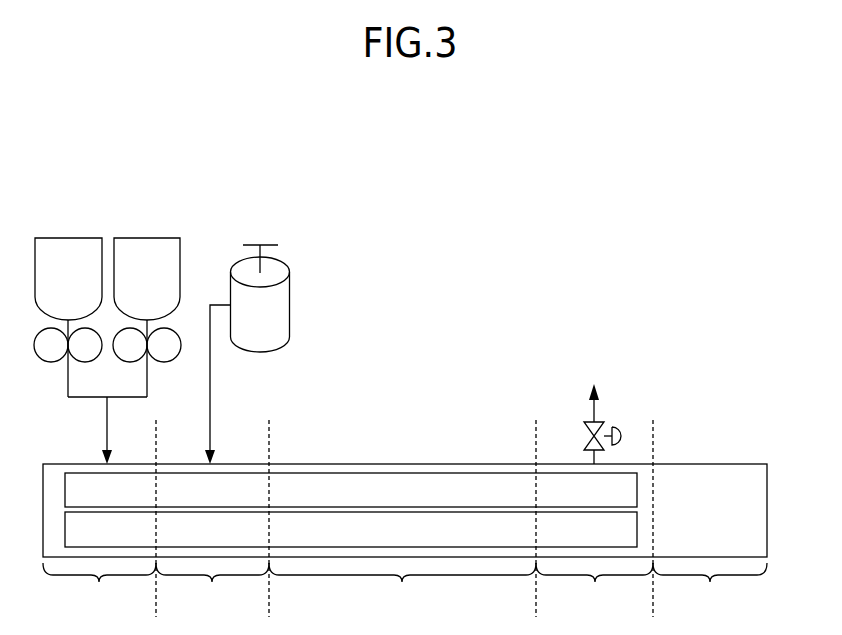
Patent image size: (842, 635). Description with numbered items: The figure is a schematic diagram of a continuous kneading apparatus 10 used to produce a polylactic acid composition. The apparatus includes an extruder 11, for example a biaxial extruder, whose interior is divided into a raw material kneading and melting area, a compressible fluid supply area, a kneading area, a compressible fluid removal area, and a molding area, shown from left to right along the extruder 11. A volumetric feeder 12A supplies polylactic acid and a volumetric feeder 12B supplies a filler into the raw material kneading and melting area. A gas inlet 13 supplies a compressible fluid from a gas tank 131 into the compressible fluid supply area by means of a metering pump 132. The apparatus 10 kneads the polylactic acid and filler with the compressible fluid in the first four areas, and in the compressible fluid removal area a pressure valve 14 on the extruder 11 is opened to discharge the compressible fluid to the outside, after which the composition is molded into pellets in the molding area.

The continuous kneading apparatus 10 is at (721, 233).
The extruder 11 is at (356, 463).
The volumetric feeder 12A is at (67, 248).
The volumetric feeder 12B is at (145, 248).
The gas inlet 13 is at (233, 181).
The gas tank 131 is at (280, 266).
The metering pump 132 is at (250, 244).
The pressure valve 14 is at (603, 420).